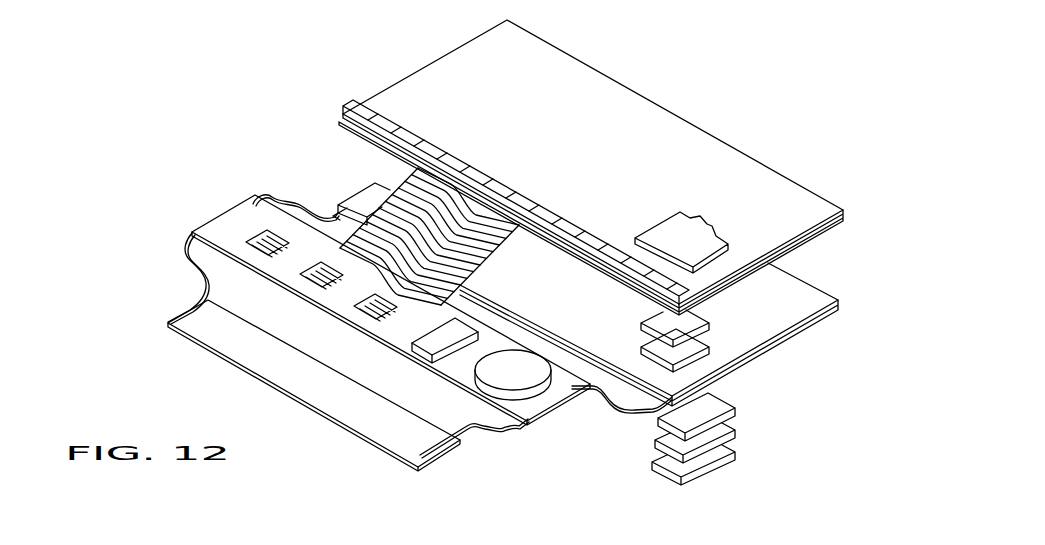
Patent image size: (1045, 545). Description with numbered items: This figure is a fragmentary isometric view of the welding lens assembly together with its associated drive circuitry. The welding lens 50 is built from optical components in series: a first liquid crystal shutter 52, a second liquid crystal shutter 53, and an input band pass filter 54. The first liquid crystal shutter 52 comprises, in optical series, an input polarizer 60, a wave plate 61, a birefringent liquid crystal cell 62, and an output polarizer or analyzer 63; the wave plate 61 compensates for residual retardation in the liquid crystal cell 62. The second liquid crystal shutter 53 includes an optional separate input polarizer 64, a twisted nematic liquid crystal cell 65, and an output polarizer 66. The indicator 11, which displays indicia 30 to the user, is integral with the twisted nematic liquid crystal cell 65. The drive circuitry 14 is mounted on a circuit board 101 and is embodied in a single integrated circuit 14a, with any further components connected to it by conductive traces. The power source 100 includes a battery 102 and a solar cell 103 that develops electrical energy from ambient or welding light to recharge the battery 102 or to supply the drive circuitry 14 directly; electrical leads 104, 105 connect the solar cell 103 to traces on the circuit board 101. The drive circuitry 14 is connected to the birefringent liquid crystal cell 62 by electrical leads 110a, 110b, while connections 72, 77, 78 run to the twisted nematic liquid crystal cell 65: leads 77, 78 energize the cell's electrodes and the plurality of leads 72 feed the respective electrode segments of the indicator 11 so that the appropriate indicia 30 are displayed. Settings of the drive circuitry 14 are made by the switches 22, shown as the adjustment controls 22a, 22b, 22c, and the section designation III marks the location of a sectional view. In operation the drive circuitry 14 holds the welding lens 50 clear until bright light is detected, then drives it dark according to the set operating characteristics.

The indicator 11 is at (380, 82).
The drive circuitry 14 is at (418, 327).
The integrated circuit 14a is at (410, 360).
The switches 22 is at (224, 197).
The switch 22a is at (247, 239).
The switch 22b is at (300, 264).
The switch 22c is at (353, 296).
The indicia 30 is at (342, 102).
The welding lens 50 is at (393, 36).
The first liquid crystal shutter 52 is at (810, 346).
The liquid crystal shutter 53 is at (599, 59).
The input band pass filter 54 is at (665, 477).
The input polarizer 60 is at (733, 430).
The wave plate 61 is at (733, 407).
The liquid crystal cell 62 is at (743, 365).
The output polarizer 63 is at (698, 342).
The polarizer 64 is at (698, 315).
The liquid crystal cell 65 is at (727, 288).
The output polarizer 66 is at (730, 252).
The leads 72 is at (467, 256).
The electrical lead 77 is at (392, 186).
The electrical lead 78 is at (492, 237).
The power source 100 is at (518, 446).
The circuit board 101 is at (458, 386).
The battery 102 is at (410, 440).
The solar cell 103 is at (363, 408).
The electrical lead 104 is at (484, 428).
The electrical lead 105 is at (205, 283).
The electrical lead 110a is at (613, 397).
The electrical lead 110b is at (285, 194).
The section line III is at (373, 200).